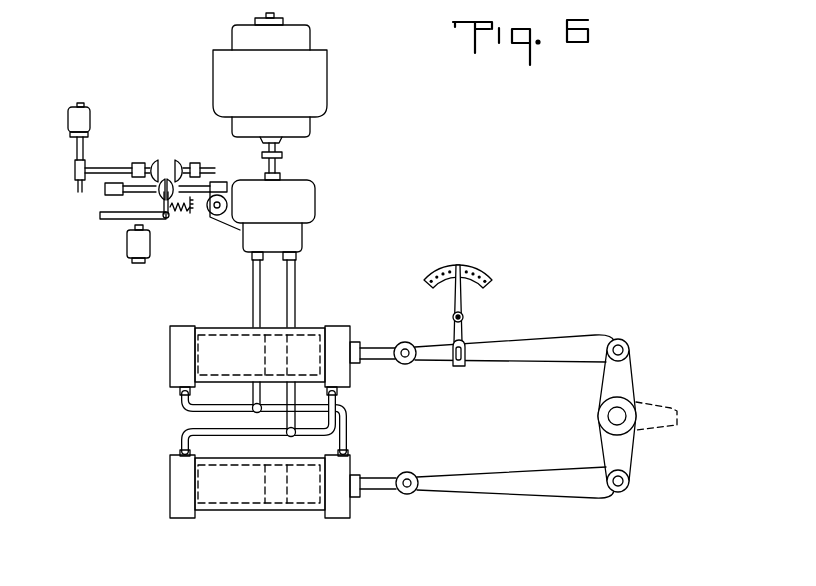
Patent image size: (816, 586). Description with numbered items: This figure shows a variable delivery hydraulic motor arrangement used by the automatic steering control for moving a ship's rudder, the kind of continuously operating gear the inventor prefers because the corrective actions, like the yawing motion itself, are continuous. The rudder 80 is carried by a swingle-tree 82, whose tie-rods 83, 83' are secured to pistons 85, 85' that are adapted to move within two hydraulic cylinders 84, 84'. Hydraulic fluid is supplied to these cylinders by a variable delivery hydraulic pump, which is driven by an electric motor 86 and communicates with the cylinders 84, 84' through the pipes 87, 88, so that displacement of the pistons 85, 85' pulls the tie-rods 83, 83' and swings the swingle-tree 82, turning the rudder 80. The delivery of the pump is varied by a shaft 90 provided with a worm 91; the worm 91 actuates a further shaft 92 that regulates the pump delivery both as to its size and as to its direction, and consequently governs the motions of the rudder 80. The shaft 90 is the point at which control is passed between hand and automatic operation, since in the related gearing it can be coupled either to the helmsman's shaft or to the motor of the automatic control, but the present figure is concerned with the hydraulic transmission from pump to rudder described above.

The rudder 80 is at (673, 407).
The swingle-tree 82 is at (623, 380).
The tie-rod 83 is at (504, 333).
The tie-rod 83' is at (505, 467).
The hydraulic cylinder 84 is at (282, 342).
The hydraulic cylinder 84' is at (291, 476).
The piston 85 is at (254, 355).
The piston 85' is at (254, 484).
The electric motor 86 is at (320, 80).
The pipe 87 is at (253, 283).
The pipe 88 is at (296, 285).
The shaft 90 is at (137, 195).
The worm 91 is at (219, 181).
The shaft 92 is at (214, 217).